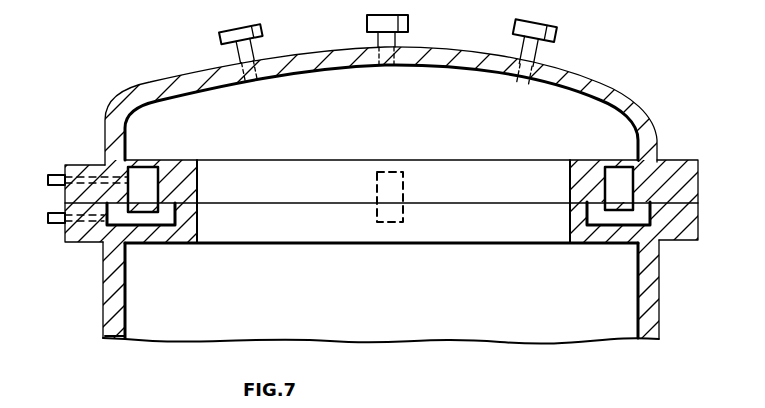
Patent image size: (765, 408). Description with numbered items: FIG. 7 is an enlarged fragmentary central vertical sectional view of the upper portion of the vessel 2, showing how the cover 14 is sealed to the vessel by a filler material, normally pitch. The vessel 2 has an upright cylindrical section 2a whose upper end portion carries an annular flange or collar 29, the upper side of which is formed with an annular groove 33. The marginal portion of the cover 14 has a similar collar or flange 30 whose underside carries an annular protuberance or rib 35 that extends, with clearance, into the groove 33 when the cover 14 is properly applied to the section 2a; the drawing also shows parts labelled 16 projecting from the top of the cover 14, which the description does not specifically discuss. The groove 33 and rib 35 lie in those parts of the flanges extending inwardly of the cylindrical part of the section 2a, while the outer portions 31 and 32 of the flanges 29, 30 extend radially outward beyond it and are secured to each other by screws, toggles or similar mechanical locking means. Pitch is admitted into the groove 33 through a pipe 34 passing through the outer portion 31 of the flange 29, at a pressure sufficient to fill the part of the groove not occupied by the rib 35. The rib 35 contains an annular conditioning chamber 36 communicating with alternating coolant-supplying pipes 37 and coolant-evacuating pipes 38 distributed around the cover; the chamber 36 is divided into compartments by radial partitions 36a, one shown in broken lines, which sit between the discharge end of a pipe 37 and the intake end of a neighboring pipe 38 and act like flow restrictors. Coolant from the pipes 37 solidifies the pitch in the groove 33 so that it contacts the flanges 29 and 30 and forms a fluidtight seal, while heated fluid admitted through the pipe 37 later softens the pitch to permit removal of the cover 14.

The vessel 2 is at (114, 306).
The upright cylindrical section 2a is at (118, 341).
The cover 14 is at (142, 102).
The bolt 16 is at (555, 36).
The annular flange 29 is at (190, 227).
The collar 30 is at (191, 176).
The outer portion of the flange 31 is at (672, 232).
The outer portion of the flange 32 is at (682, 170).
The annular groove 33 is at (138, 228).
The pipe 34 is at (60, 226).
The annular rib 35 is at (155, 222).
The annular conditioning chamber 36 is at (145, 172).
The radial partition 36a is at (388, 172).
The coolant-supplying pipe 37 is at (58, 176).
The coolant-evacuating pipe 38 is at (56, 218).